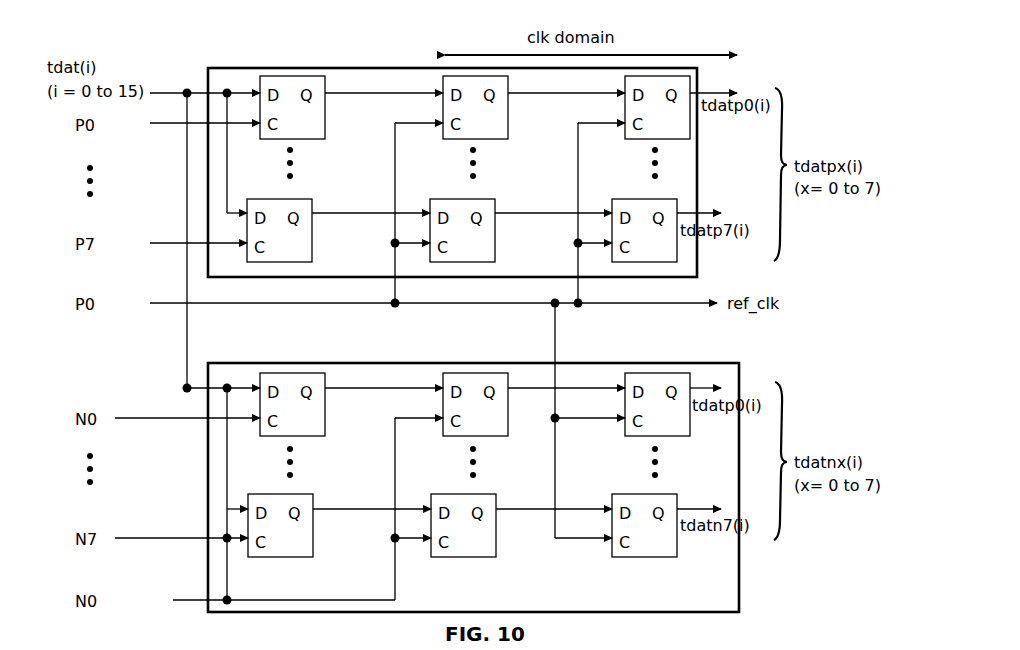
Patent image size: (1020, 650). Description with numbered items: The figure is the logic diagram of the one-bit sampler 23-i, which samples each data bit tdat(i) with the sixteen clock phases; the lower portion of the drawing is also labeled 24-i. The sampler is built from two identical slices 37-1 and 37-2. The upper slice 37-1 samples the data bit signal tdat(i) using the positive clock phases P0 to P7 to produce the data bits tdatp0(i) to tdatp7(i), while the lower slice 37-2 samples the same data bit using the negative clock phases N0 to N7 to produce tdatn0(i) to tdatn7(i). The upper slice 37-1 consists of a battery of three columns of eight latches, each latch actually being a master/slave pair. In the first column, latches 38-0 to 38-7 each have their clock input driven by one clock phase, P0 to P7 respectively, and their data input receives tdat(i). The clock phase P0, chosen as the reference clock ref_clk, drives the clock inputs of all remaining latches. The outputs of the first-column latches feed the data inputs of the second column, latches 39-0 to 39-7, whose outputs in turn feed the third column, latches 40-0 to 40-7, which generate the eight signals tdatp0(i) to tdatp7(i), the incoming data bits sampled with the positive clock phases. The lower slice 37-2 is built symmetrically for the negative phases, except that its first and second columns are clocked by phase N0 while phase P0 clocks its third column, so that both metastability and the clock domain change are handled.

The one-bit sampler 23-i is at (818, 66).
The transmitter data path block (negative side) 24-i is at (524, 506).
The upper slice 37-1 is at (697, 184).
The lower slice 37-2 is at (742, 586).
The first column latch 38-0 is at (306, 75).
The first column latch 38-7 is at (311, 197).
The second column latch 39-0 is at (508, 119).
The second column latch 39-7 is at (497, 206).
The third column latch 40-0 is at (690, 130).
The third column latch 40-7 is at (677, 258).